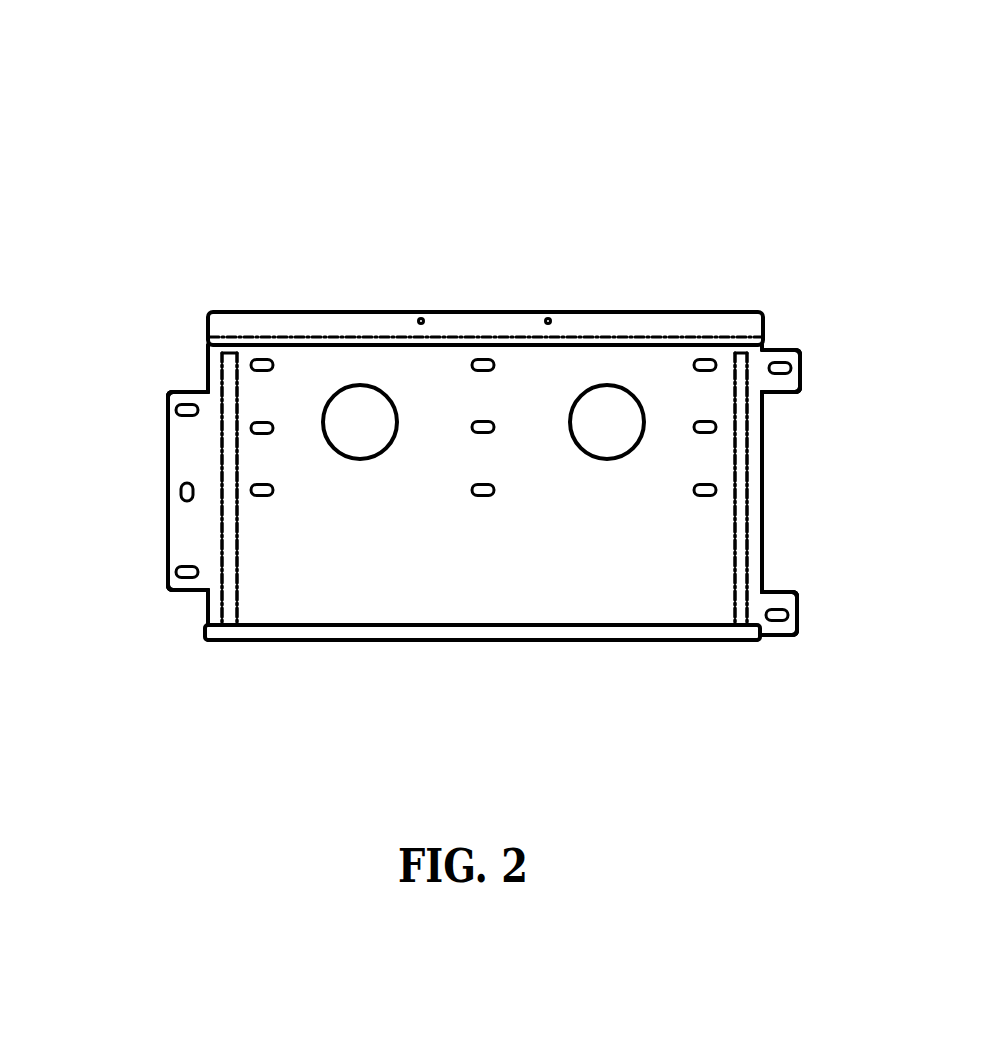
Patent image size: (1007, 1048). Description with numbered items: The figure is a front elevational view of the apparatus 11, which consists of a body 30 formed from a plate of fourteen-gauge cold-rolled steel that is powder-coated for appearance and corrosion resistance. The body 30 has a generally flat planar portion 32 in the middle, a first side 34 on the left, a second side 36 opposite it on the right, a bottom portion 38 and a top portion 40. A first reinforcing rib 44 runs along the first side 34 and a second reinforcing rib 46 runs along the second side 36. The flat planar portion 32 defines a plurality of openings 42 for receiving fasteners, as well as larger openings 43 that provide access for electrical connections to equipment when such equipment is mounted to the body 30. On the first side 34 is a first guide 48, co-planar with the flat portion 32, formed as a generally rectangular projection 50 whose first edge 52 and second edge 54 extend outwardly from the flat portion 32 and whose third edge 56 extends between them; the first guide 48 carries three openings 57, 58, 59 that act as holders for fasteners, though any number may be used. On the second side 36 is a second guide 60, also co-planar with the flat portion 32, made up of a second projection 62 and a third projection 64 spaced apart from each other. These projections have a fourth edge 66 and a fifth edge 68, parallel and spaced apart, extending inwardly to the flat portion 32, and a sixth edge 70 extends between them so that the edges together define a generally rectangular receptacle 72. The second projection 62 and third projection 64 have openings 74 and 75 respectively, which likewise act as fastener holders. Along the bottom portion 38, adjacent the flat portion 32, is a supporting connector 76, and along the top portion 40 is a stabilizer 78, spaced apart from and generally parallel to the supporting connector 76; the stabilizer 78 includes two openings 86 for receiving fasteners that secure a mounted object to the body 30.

The apparatus 11 is at (605, 108).
The body 30 is at (299, 385).
The generally flat planar portion 32 is at (497, 575).
The first side 34 is at (203, 550).
The second side 36 is at (727, 593).
The bottom portion 38 is at (410, 658).
The top portion 40 is at (595, 298).
The openings 42 is at (273, 490).
The openings 43 is at (397, 422).
The first reinforcing rib 44 is at (227, 590).
The second reinforcing rib 46 is at (752, 607).
The first guide 48 is at (137, 527).
The generally rectangular projection 50 is at (212, 463).
The first edge 52 is at (190, 390).
The second edge 54 is at (185, 592).
The third edge 56 is at (168, 447).
The opening 57 is at (182, 410).
The opening 58 is at (182, 490).
The opening 59 is at (182, 572).
The second guide 60 is at (830, 453).
The second projection 62 is at (786, 352).
The third projection 64 is at (782, 636).
The fourth edge 66 is at (785, 394).
The fifth edge 68 is at (770, 590).
The sixth edge 70 is at (763, 530).
The generally rectangular receptacle 72 is at (802, 490).
The opening 74 is at (790, 368).
The opening 75 is at (790, 615).
The supporting connector 76 is at (478, 632).
The stabilizer 78 is at (348, 323).
The openings 86 is at (546, 319).